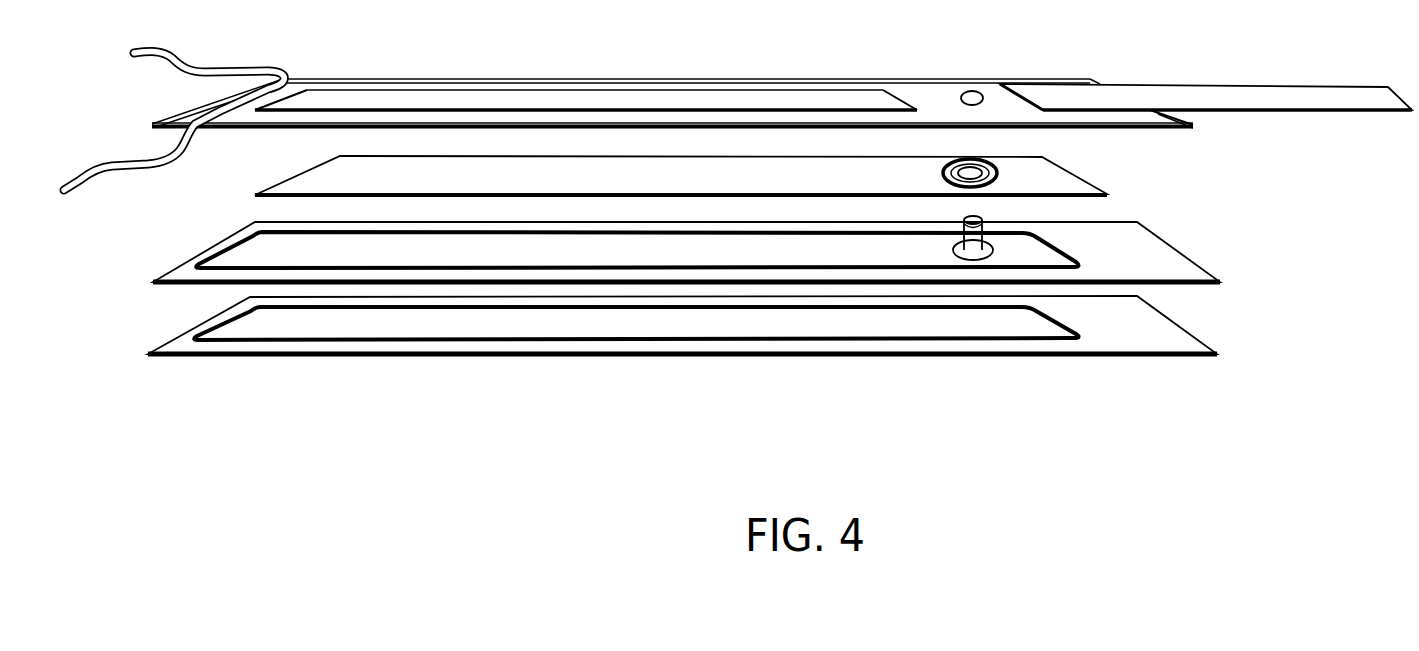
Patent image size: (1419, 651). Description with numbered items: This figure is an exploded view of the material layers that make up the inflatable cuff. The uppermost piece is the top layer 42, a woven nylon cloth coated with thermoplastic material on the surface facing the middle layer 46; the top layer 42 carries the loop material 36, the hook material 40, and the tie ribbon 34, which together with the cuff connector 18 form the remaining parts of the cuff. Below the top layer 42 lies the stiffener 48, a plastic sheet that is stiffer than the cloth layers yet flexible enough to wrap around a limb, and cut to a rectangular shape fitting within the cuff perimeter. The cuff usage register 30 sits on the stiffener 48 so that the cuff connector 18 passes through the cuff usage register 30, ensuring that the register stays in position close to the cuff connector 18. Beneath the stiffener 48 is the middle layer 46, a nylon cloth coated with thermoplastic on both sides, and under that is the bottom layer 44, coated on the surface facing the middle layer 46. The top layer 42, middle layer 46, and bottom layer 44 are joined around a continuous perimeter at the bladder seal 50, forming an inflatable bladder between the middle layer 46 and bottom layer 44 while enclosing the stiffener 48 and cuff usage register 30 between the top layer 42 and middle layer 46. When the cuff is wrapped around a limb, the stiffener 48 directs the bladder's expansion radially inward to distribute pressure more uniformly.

The cuff connector 18 is at (1100, 246).
The cuff usage register 30 is at (997, 170).
The tie ribbon 34 is at (200, 68).
The loop material 36 is at (770, 95).
The hook material 40 is at (1222, 87).
The top layer 42 is at (1193, 126).
The bottom layer 44 is at (1217, 354).
The middle layer 46 is at (1220, 282).
The stiffener 48 is at (255, 195).
The bladder seal 50 is at (487, 268).